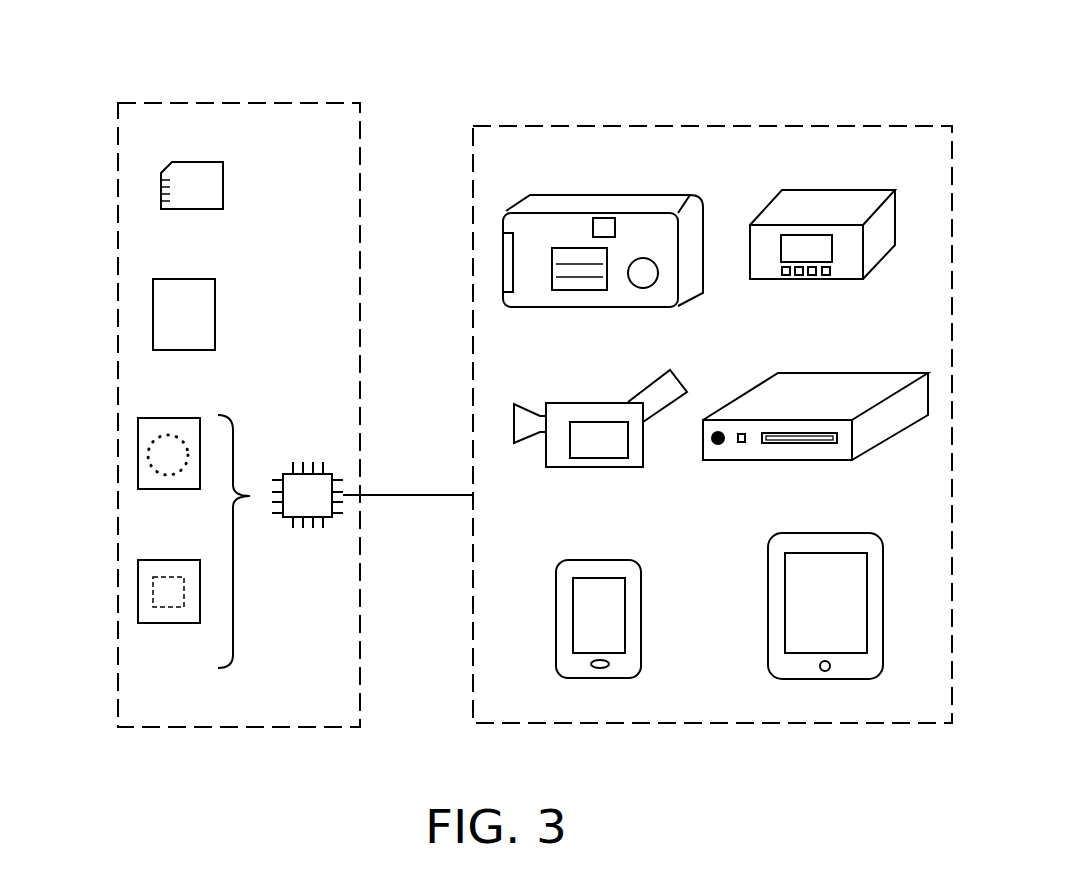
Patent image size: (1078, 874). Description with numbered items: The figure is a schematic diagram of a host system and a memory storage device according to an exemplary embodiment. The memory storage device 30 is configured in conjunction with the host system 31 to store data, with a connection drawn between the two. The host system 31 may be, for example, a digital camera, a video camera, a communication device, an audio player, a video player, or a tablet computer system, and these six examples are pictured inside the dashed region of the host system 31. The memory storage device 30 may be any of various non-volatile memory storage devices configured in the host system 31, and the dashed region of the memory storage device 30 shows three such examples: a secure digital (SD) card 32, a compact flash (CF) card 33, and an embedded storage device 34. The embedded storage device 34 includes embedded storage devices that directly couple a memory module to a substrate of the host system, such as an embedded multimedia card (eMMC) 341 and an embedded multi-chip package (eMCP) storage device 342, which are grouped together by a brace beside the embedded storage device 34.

The memory storage device 30 is at (229, 101).
The host system 31 is at (637, 125).
The secure digital (SD) card 32 is at (161, 192).
The compact flash (CF) card 33 is at (153, 315).
The embedded storage device 34 is at (308, 471).
The embedded multimedia card (eMMC) 341 is at (138, 457).
The embedded multi-chip package (eMCP) storage device 342 is at (138, 595).